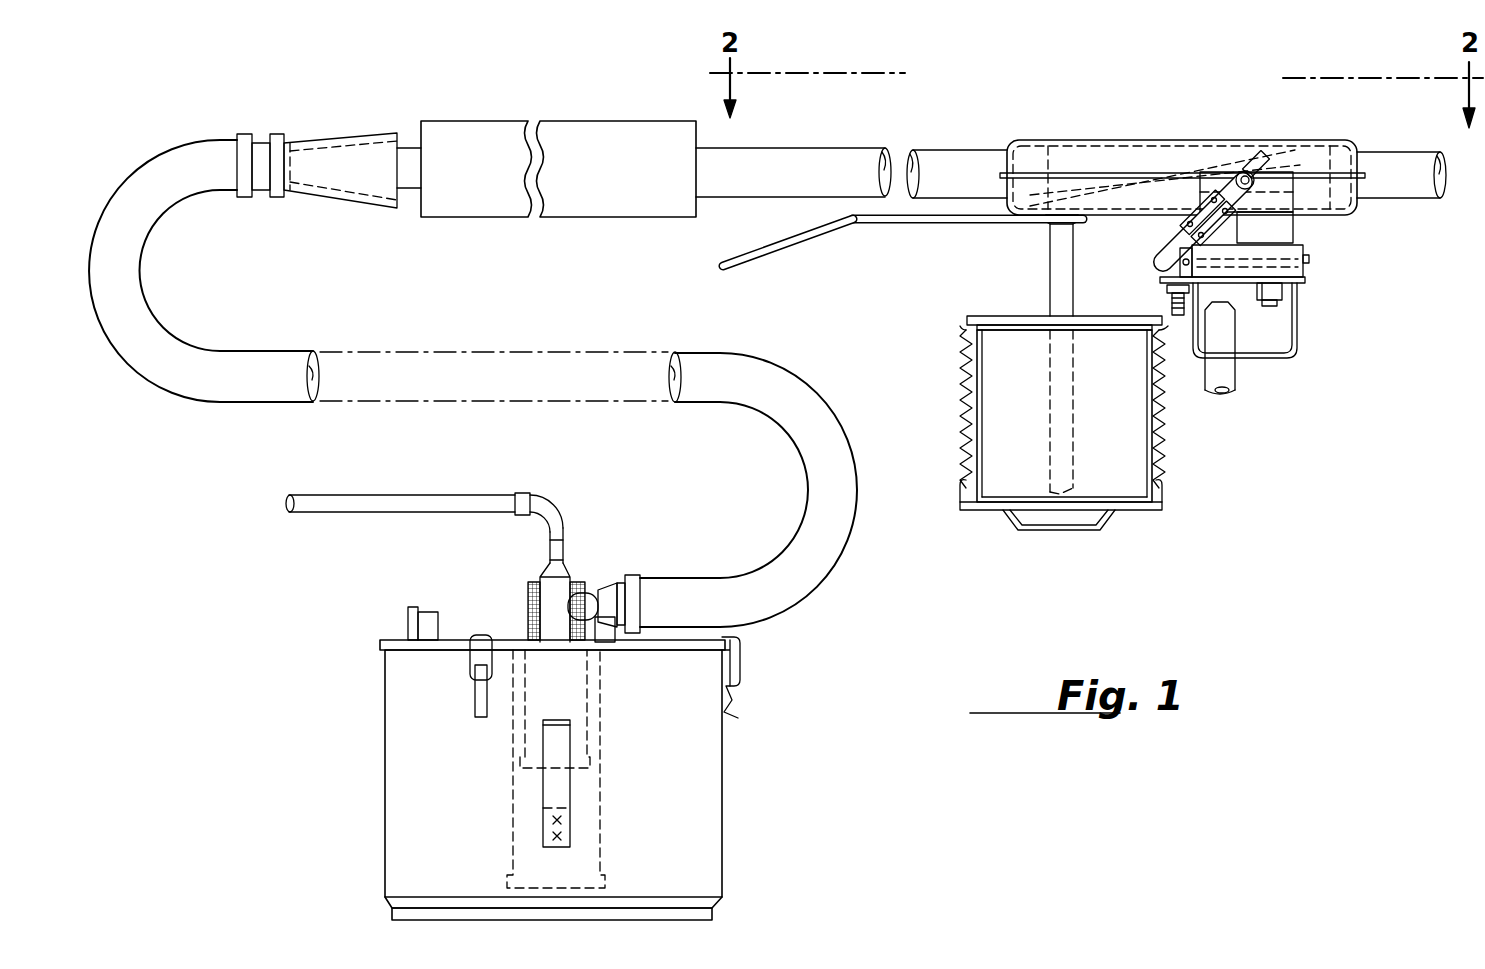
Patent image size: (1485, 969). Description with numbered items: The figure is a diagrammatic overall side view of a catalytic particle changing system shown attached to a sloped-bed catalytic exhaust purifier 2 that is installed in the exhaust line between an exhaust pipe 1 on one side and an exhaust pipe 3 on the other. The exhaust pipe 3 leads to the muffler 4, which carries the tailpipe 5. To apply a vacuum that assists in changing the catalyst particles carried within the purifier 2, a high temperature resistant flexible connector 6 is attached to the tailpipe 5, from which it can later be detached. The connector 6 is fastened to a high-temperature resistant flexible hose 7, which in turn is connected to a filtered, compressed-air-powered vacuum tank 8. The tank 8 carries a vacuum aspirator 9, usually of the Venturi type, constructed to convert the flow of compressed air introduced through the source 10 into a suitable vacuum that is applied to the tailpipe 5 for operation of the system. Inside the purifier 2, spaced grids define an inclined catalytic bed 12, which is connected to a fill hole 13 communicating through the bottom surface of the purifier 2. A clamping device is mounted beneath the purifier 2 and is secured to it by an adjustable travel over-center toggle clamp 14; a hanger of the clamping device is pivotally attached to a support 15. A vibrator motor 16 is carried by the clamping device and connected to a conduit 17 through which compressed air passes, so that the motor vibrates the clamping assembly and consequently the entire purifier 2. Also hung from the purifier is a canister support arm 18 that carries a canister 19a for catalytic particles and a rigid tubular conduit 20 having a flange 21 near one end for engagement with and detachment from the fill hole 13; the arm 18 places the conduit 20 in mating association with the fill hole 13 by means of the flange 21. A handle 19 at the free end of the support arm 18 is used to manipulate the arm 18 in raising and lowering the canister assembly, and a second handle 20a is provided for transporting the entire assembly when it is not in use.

The exhaust pipe 1 is at (1405, 190).
The catalytic exhaust purifier 2 is at (1176, 128).
The exhaust pipe 3 is at (815, 163).
The muffler 4 is at (565, 135).
The tailpipe 5 is at (403, 143).
The flexible connector 6 is at (342, 132).
The flexible hose 7 is at (262, 360).
The vacuum tank 8 is at (410, 718).
The vacuum aspirator 9 is at (565, 578).
The compressed air source 10 is at (448, 505).
The inclined catalytic bed 12 is at (1284, 146).
The fill hole 13 is at (1058, 205).
The over-center toggle clamp 14 is at (1162, 252).
The support 15 is at (1305, 276).
The vibrator motor 16 is at (1272, 300).
The conduit 17 is at (1222, 378).
The canister support arm 18 is at (949, 224).
The handle 19 is at (781, 245).
The canister 19a is at (1143, 447).
The rigid tubular conduit 20 is at (1050, 285).
The second handle 20a is at (1298, 352).
The flange 21 is at (1050, 221).